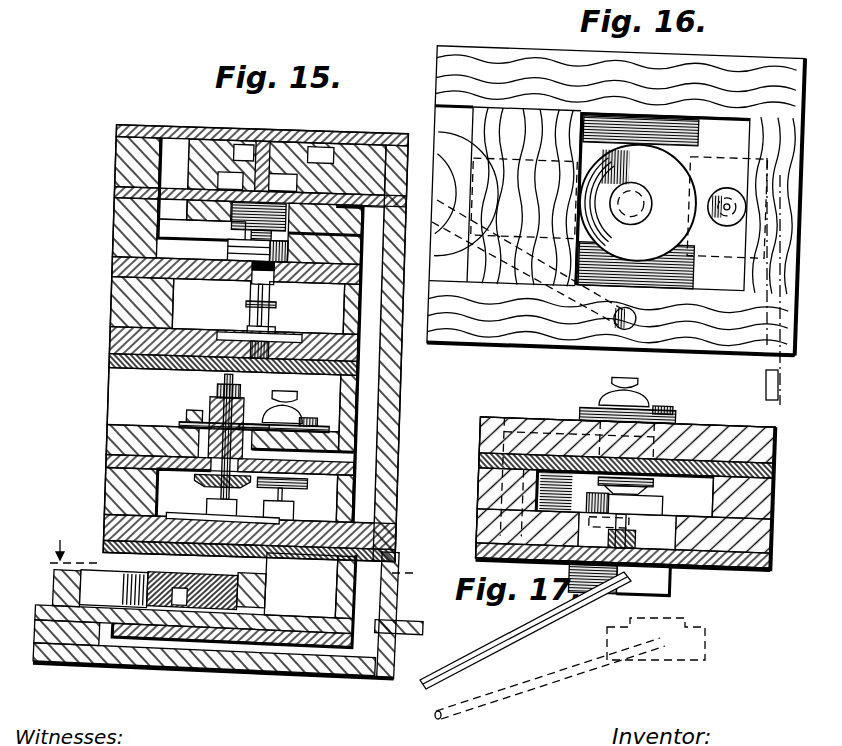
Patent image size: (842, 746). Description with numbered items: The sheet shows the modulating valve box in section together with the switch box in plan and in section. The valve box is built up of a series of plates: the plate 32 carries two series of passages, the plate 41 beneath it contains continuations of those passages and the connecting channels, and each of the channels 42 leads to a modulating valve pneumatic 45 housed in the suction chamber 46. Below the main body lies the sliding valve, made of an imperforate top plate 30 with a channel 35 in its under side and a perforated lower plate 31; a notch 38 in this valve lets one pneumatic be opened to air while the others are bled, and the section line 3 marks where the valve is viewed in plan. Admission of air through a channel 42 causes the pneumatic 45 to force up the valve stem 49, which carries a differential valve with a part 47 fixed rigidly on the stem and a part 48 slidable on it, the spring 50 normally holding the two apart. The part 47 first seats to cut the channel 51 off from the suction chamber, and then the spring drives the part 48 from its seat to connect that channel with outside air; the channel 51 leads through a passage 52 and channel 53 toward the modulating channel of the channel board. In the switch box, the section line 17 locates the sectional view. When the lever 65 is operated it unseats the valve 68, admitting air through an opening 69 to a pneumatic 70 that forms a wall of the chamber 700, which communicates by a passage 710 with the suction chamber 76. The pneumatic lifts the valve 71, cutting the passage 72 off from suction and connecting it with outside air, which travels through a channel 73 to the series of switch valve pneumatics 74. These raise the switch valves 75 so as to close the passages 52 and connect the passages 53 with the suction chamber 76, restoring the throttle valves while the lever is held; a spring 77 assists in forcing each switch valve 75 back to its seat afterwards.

In FIG. 15, the channel 53 is at (183, 162).
In FIG. 15, the spring 77 is at (272, 205).
In FIG. 15, the passage 52 is at (288, 228).
In FIG. 15, the switch valve 75 is at (243, 251).
In FIG. 15, the switch valve pneumatic 74 is at (250, 328).
In FIG. 16, the switch valve pneumatic 74 is at (437, 160).
In FIG. 15, the suction chamber 76 is at (306, 308).
In FIG. 16, the suction chamber 76 is at (703, 234).
In FIG. 15, the valve stem 49 is at (224, 400).
In FIG. 15, the valve part 48 is at (207, 412).
In FIG. 15, the spring 50 is at (180, 425).
In FIG. 15, the channel 73 is at (303, 380).
In FIG. 16, the channel 73 is at (533, 272).
In FIG. 15, the channel 51 is at (375, 406).
In FIG. 15, the suction chamber 46 is at (160, 490).
In FIG. 15, the valve part 47 is at (246, 495).
In FIG. 15, the modulating valve pneumatic 45 is at (262, 522).
In FIG. 15, the section line 3 is at (232, 564).
In FIG. 15, the channel 42 is at (367, 598).
In FIG. 15, the plate 41 is at (393, 650).
In FIG. 15, the notch 38 is at (100, 588).
In FIG. 15, the channel 35 is at (178, 600).
In FIG. 15, the imperforate top plate 30 is at (205, 600).
In FIG. 15, the perforated lower plate 31 is at (230, 610).
In FIG. 15, the plate 32 is at (312, 625).
In FIG. 16, the section line 17 is at (773, 43).
In FIG. 16, the pneumatic 70 is at (655, 174).
In FIG. 17, the pneumatic 70 is at (643, 580).
In FIG. 16, the passage 710 is at (612, 250).
In FIG. 17, the passage 710 is at (570, 492).
In FIG. 16, the valve 68 is at (662, 202).
In FIG. 17, the valve 68 is at (670, 596).
In FIG. 16, the passage 72 is at (618, 326).
In FIG. 17, the passage 72 is at (500, 494).
In FIG. 16, the lever 65 is at (778, 398).
In FIG. 17, the lever 65 is at (505, 640).
In FIG. 17, the valve 71 is at (655, 485).
In FIG. 17, the chamber 700 is at (661, 504).
In FIG. 17, the opening 69 is at (622, 580).